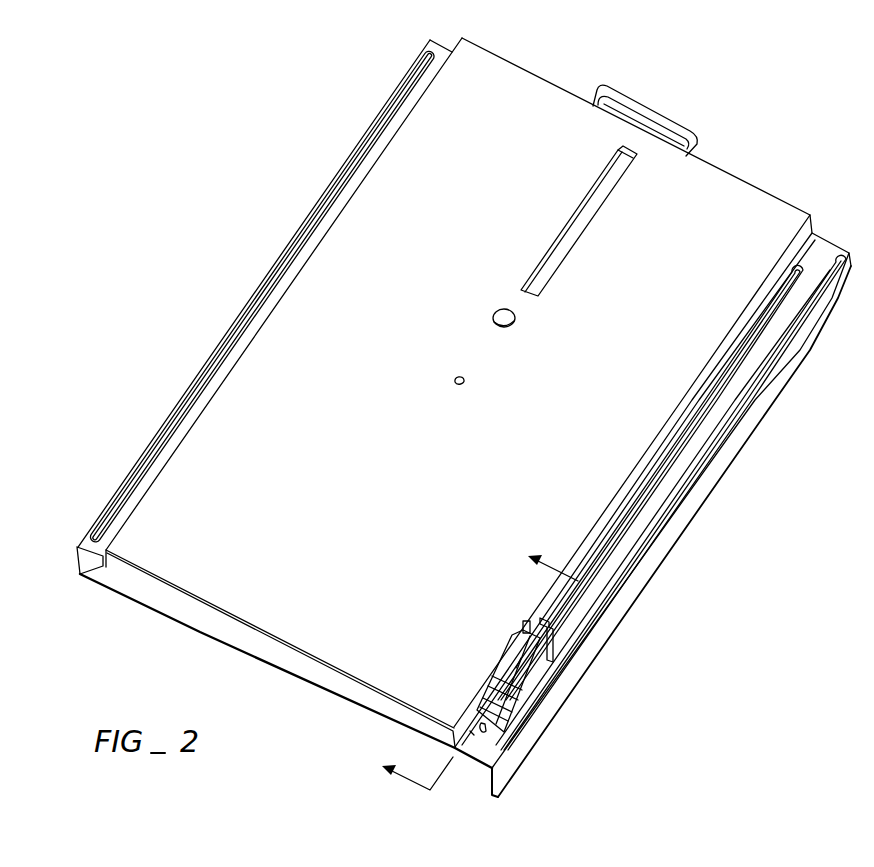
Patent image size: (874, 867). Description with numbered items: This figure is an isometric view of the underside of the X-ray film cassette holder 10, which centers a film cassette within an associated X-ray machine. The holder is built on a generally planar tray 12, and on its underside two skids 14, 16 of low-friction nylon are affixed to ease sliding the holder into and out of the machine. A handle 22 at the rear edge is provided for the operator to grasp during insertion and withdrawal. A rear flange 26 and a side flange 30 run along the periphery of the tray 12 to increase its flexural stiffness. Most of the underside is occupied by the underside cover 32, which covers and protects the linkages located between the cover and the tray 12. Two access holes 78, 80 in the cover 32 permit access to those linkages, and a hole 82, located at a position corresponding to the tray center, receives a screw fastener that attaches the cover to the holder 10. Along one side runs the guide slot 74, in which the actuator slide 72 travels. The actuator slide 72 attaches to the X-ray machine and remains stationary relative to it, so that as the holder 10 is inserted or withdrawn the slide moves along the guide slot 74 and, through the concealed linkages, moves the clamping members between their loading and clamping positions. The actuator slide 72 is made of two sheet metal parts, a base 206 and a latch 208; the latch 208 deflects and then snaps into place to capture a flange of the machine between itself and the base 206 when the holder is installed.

The X-ray film cassette holder 10 is at (226, 188).
The tray 12 is at (288, 678).
The skid 14 is at (151, 440).
The skid 16 is at (560, 663).
The handle 22 is at (683, 122).
The rear flange 26 is at (229, 638).
The side flange 30 is at (709, 502).
The underside cover 32 is at (191, 572).
The actuator slide 72 is at (495, 663).
The guide slot 74 is at (600, 572).
The access hole 78 is at (602, 203).
The access hole 80 is at (515, 319).
The hole 82 is at (472, 380).
The base 206 is at (478, 706).
The latch 208 is at (515, 637).